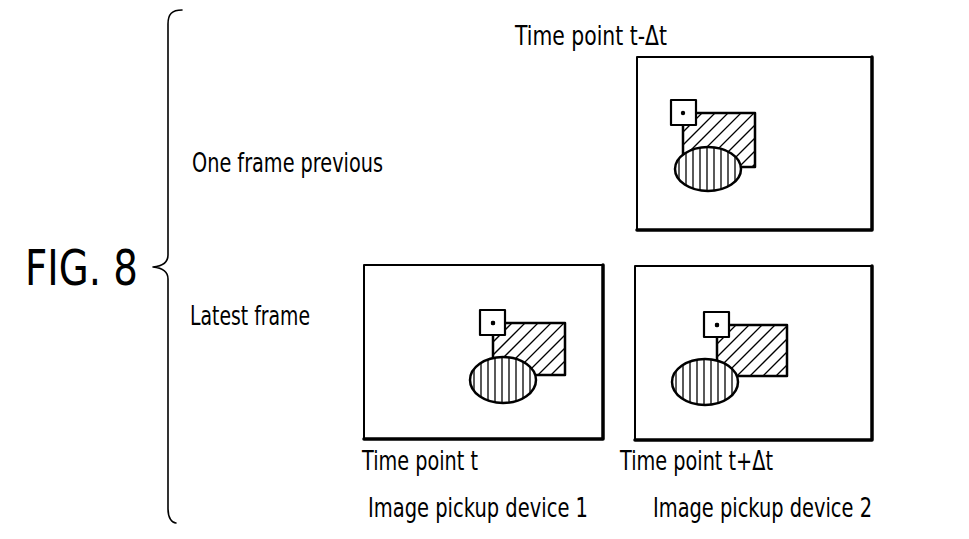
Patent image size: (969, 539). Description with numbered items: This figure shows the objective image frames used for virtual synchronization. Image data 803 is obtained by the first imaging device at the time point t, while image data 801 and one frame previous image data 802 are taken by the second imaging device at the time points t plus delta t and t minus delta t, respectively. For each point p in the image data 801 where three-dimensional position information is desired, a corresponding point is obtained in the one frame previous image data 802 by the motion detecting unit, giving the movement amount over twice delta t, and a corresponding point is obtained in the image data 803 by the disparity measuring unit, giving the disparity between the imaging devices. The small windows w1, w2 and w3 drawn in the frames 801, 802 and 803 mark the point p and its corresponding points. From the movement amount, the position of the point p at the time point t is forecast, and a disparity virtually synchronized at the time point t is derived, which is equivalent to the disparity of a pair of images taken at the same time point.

The image data 801 is at (818, 440).
The one frame previous image data 802 is at (793, 57).
The image data 803 is at (543, 440).
The window in latest frame of image pickup device 2 w1 is at (718, 308).
The window in one-frame-previous image of image pickup device 2 w2 is at (688, 96).
The window in latest frame of image pickup device 1 w3 is at (493, 306).
The point p is at (689, 311).